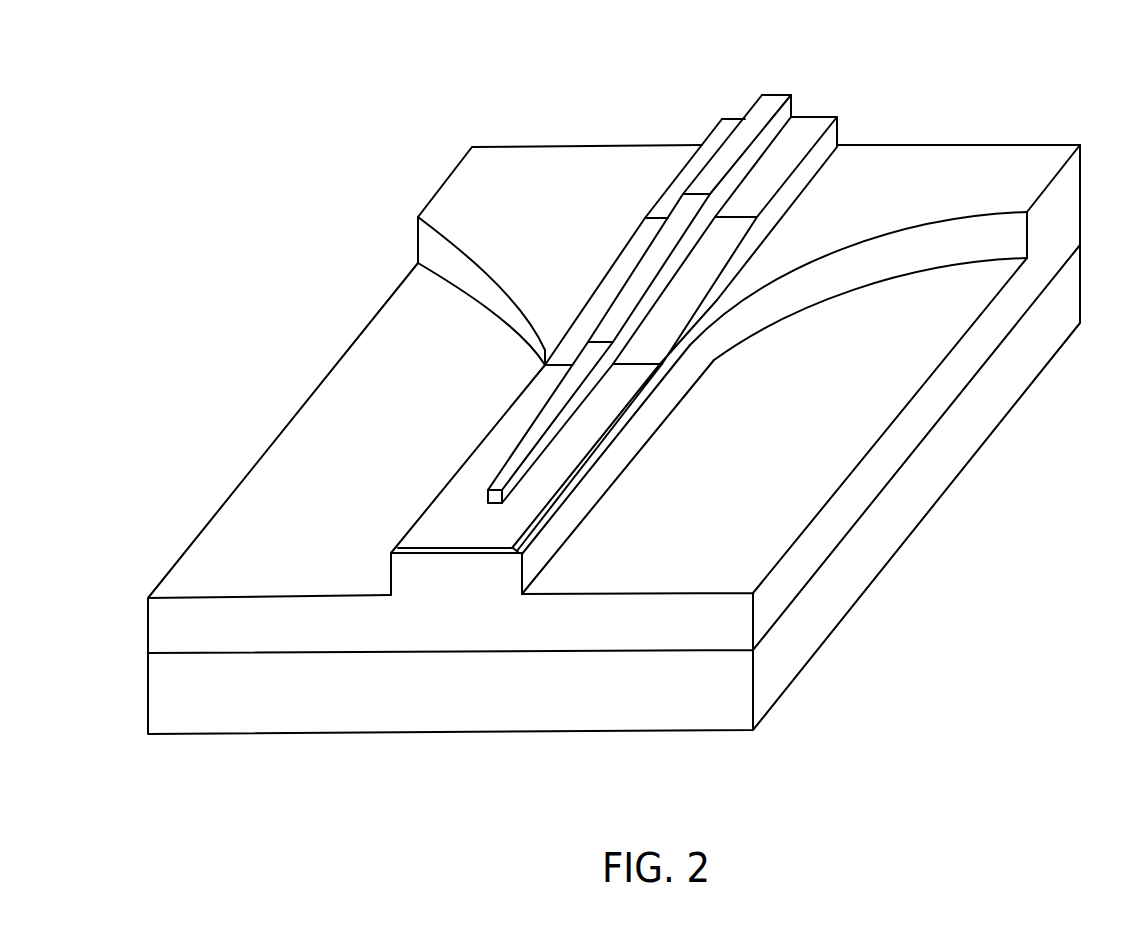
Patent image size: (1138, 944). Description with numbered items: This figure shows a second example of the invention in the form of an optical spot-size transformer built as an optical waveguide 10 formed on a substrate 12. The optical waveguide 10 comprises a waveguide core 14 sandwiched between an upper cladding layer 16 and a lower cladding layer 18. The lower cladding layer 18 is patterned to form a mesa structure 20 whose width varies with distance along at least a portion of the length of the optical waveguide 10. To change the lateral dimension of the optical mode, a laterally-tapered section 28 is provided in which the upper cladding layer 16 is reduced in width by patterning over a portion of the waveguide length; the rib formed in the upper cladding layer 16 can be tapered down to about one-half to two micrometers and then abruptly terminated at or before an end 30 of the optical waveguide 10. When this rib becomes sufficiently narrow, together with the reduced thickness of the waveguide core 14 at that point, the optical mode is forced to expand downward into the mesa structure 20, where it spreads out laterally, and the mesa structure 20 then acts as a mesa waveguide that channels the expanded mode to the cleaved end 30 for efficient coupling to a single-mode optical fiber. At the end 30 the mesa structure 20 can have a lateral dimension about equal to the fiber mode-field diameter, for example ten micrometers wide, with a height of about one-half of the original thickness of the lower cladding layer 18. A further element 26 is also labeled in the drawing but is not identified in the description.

The optical waveguide 10 is at (720, 97).
The substrate 12 is at (175, 710).
The waveguide core 14 is at (838, 128).
The upper cladding layer 16 is at (793, 105).
The lower cladding layer 18 is at (175, 636).
The mesa structure 20 is at (620, 452).
The curved waveguide arm 26 is at (597, 270).
The laterally-tapered section 28 is at (488, 408).
The end 30 is at (408, 577).